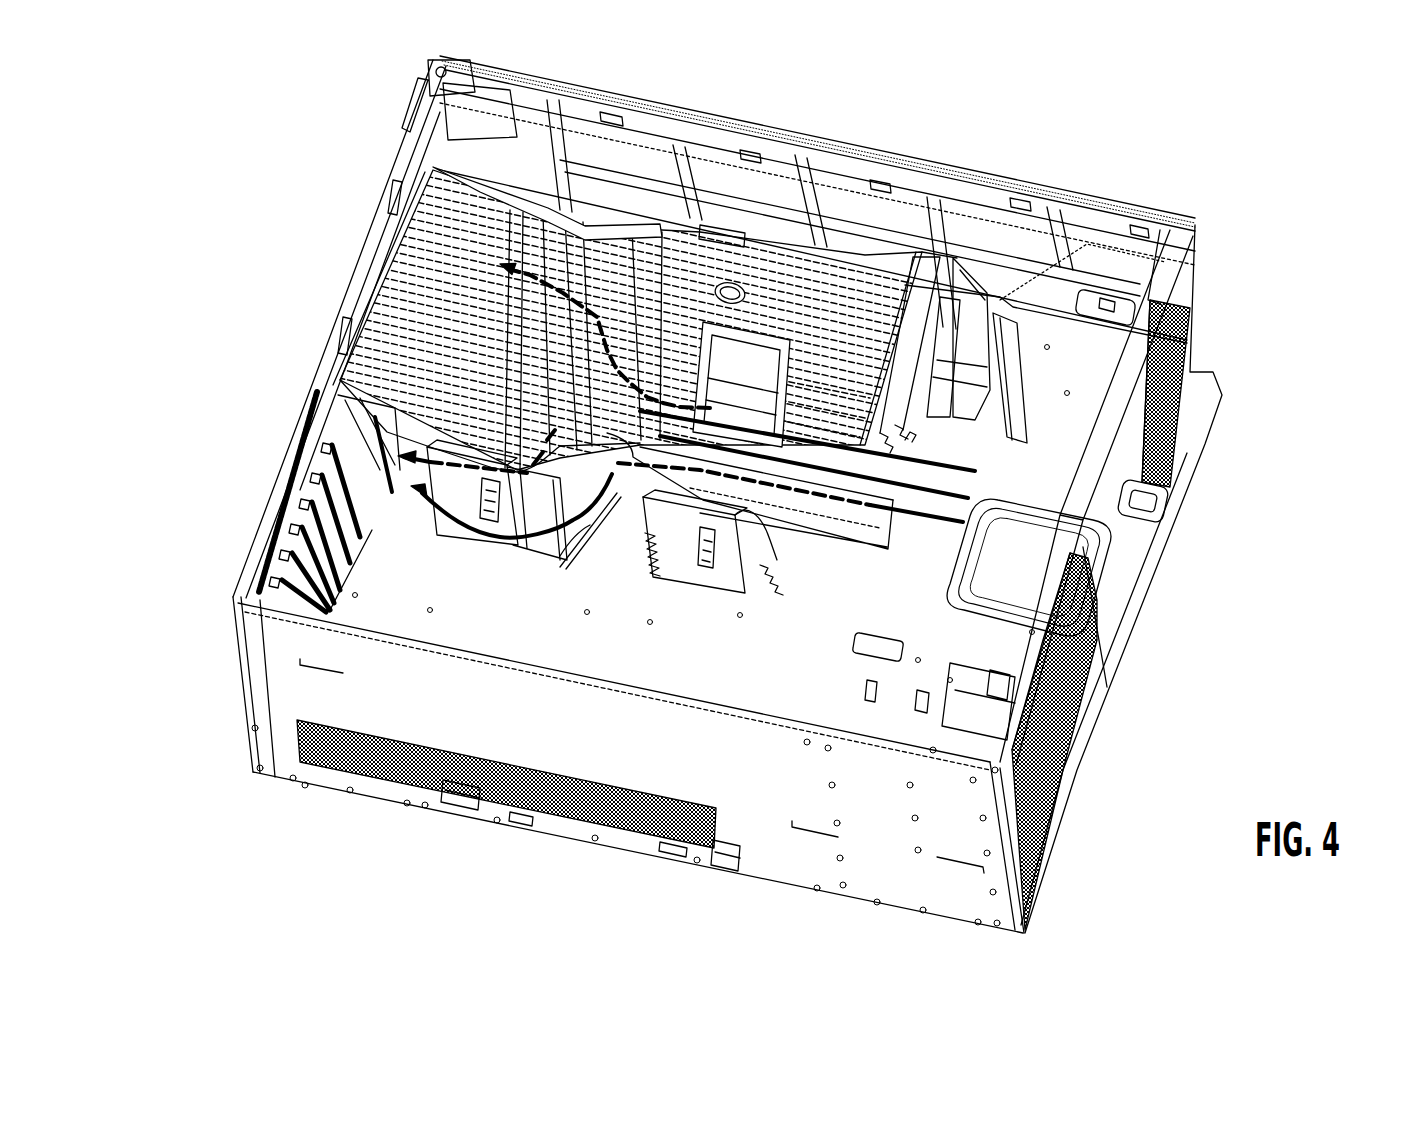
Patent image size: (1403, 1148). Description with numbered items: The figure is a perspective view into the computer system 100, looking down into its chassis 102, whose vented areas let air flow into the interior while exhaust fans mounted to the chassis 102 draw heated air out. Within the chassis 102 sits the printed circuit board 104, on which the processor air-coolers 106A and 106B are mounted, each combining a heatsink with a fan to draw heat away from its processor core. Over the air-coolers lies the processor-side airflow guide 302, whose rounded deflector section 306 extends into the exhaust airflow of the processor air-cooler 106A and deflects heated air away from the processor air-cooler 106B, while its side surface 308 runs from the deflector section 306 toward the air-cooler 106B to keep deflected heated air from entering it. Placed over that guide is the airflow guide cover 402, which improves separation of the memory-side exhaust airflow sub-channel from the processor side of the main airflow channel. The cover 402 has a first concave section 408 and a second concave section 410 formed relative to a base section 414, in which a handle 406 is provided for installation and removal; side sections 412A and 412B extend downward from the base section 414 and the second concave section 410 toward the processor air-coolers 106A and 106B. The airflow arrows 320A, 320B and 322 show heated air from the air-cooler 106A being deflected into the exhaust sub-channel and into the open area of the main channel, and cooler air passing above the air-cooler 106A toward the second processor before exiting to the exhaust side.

The computer system 100 is at (1240, 660).
The chassis 102 is at (1093, 740).
The printed circuit board 104 is at (852, 660).
The processor air-cooler 106A is at (700, 583).
The processor air-cooler 106B is at (458, 538).
The processor-side airflow guide 302 is at (565, 562).
The rounded deflector section 306 is at (593, 513).
The side surface 308 is at (528, 548).
The airflow arrow 320A is at (953, 473).
The airflow arrow 320B is at (925, 516).
The airflow arrow 322 is at (968, 498).
The airflow guide cover 402 is at (832, 545).
The handle 406 is at (788, 384).
The first concave section 408 is at (915, 241).
The second concave section 410 is at (545, 162).
The side section 412A is at (797, 531).
The side section 412B is at (422, 524).
The base section 414 is at (825, 404).